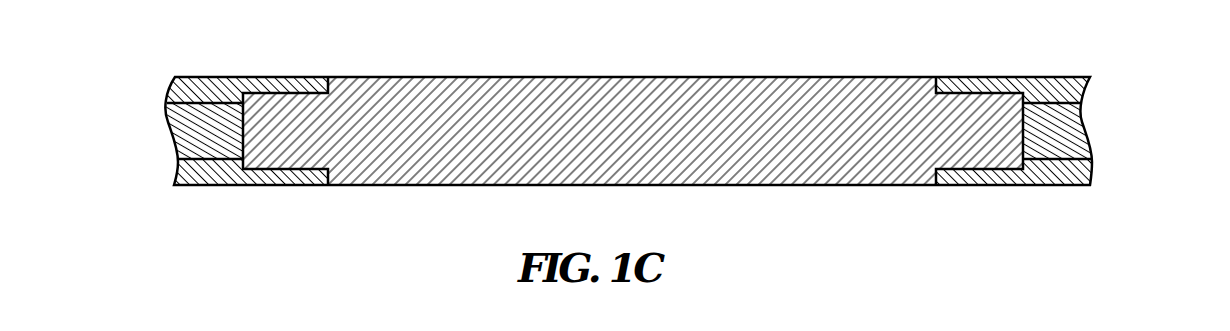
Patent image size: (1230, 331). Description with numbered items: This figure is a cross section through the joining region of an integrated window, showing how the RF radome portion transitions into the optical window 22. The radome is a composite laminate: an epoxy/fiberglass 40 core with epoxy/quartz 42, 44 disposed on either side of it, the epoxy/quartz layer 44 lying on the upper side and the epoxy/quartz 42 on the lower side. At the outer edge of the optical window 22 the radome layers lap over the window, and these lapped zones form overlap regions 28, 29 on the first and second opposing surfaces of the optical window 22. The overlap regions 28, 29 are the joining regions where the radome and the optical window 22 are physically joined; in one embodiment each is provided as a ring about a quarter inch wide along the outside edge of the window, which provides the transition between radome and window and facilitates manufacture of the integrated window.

The optical window 22 is at (495, 77).
The overlap region 28 is at (284, 77).
The overlap region 29 is at (287, 186).
The epoxy/fiberglass 40 is at (178, 130).
The epoxy/quartz 42 is at (213, 186).
The epoxy/quartz layer 44 is at (197, 77).